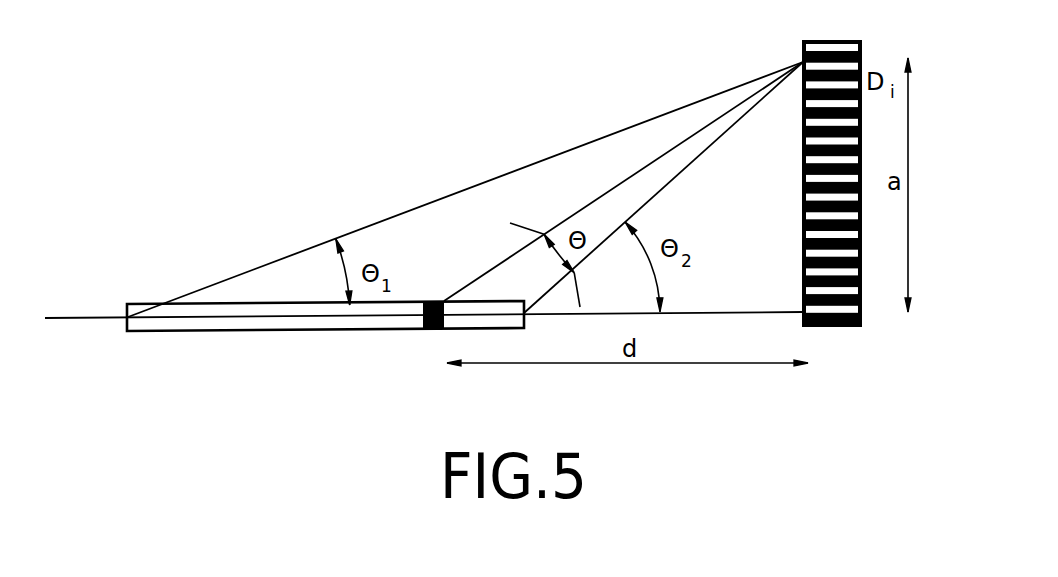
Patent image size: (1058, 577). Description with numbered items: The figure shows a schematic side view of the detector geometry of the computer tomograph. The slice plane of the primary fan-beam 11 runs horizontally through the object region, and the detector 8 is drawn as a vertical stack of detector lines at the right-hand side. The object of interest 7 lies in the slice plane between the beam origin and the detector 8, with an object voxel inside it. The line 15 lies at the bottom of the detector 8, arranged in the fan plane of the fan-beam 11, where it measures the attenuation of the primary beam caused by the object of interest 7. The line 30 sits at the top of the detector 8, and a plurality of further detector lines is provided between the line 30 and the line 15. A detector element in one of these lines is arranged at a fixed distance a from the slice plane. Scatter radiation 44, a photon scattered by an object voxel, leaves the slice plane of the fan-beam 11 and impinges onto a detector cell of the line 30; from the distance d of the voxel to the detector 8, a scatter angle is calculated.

The fan-beam 11 is at (87, 317).
The detector array 7 is at (238, 332).
The scatter radiation 44 is at (498, 177).
The line 30 is at (862, 47).
The line 15 is at (862, 312).
The detector 8 is at (833, 327).